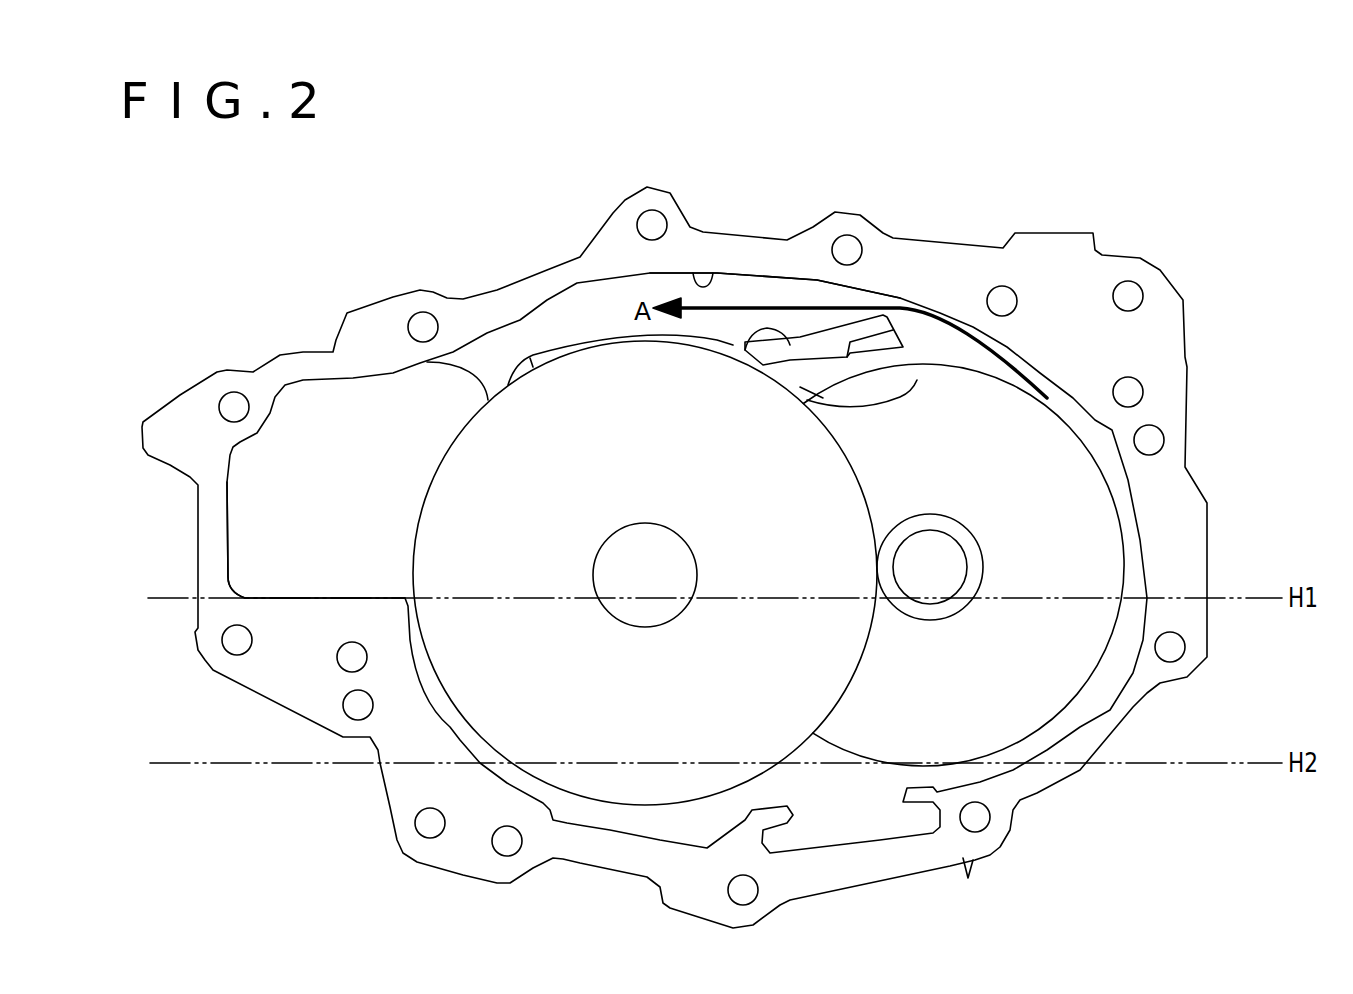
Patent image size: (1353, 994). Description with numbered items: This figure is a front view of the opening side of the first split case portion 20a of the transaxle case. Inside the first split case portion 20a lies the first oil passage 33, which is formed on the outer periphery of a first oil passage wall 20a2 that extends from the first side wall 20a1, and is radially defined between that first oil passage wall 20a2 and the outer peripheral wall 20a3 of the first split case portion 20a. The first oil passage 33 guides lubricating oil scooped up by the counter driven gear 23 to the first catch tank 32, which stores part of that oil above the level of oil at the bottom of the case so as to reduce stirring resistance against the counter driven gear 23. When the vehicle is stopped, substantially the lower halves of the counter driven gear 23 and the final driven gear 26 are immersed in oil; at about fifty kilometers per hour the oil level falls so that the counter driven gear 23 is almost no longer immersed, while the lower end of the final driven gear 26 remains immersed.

The first split case portion 20a is at (1006, 214).
The first side wall 20a1 is at (917, 380).
The first oil passage wall 20a2 is at (862, 335).
The outer peripheral wall 20a3 is at (712, 273).
The first oil passage 33 is at (792, 293).
The final driven gear 26 is at (567, 427).
The counter driven gear 23 is at (1033, 683).
The first catch tank 32 is at (323, 555).